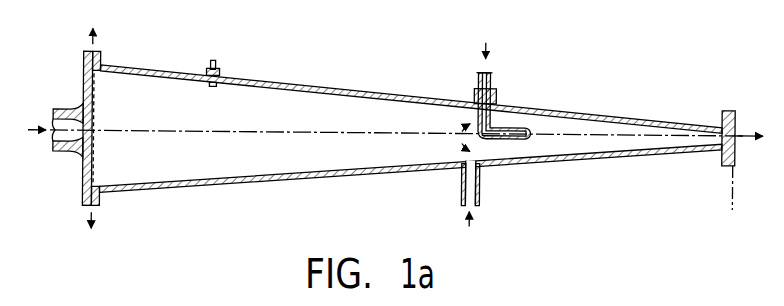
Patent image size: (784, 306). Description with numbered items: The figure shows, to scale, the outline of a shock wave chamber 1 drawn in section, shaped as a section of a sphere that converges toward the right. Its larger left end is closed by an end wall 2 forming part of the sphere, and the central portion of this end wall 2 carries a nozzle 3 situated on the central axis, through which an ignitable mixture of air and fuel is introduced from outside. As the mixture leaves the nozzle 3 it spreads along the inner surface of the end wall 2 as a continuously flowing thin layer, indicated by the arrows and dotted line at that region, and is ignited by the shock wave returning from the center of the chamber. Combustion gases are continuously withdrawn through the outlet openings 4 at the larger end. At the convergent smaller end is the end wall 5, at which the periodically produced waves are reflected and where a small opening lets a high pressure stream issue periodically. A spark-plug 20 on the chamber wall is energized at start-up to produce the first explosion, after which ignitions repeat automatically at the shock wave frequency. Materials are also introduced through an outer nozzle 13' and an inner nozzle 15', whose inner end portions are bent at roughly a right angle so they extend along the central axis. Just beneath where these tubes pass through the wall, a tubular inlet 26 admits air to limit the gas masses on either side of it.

The shock wave chamber 1 is at (337, 104).
The end wall 2 is at (81, 164).
The nozzle 3 is at (69, 110).
The outlet openings 4 is at (99, 54).
The end wall 5 is at (734, 140).
The outer nozzle 13' is at (505, 92).
The inner nozzle 15' is at (506, 95).
The spark-plug 20 is at (215, 67).
The tubular inlet 26 is at (482, 196).